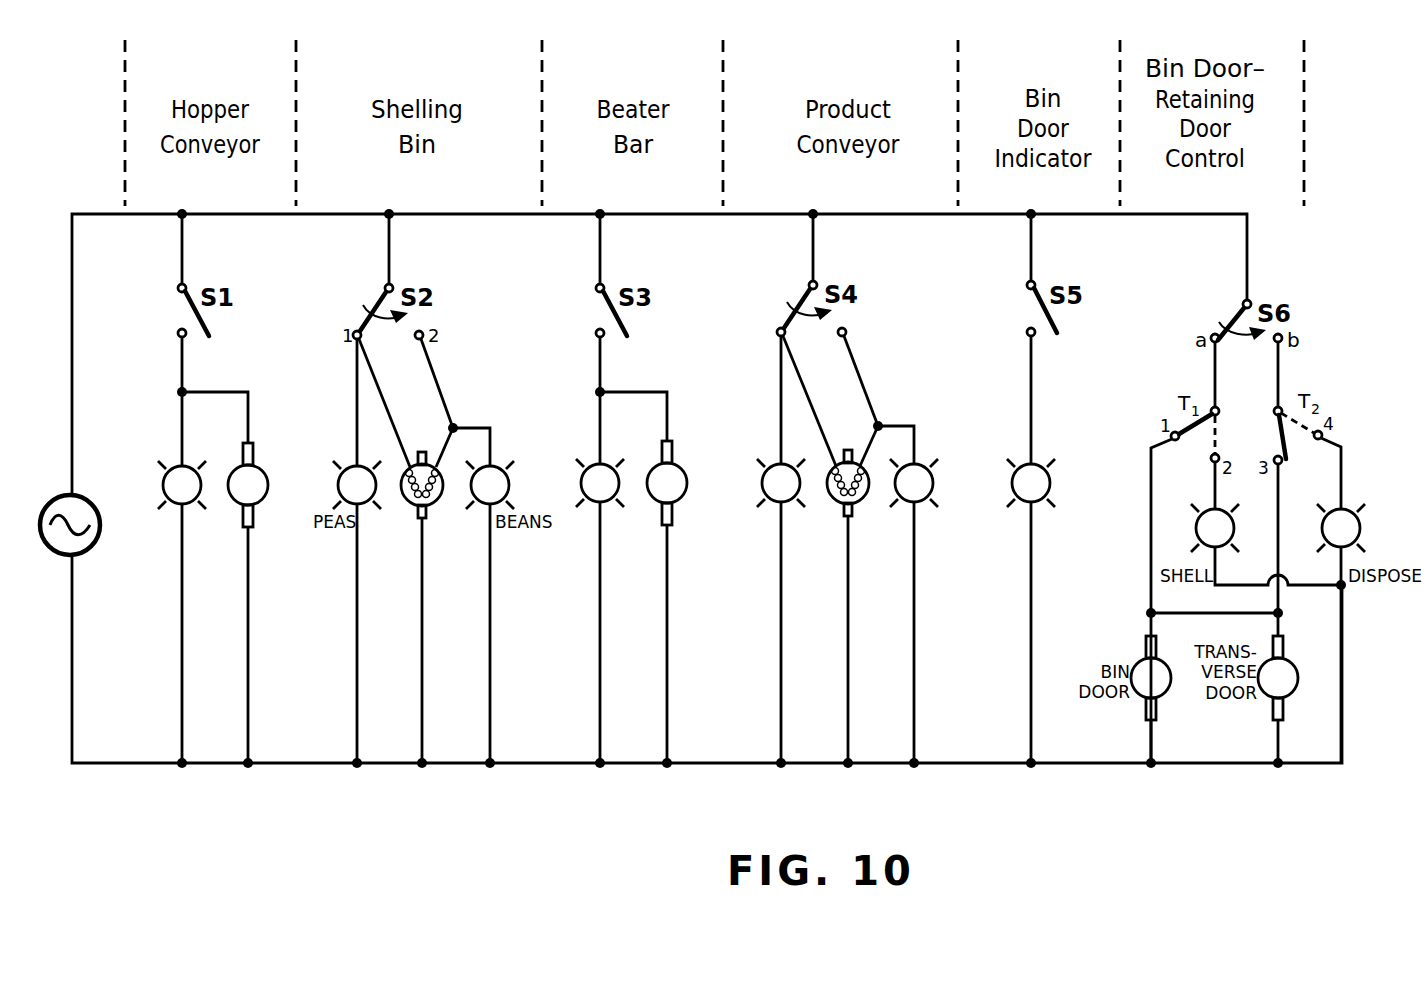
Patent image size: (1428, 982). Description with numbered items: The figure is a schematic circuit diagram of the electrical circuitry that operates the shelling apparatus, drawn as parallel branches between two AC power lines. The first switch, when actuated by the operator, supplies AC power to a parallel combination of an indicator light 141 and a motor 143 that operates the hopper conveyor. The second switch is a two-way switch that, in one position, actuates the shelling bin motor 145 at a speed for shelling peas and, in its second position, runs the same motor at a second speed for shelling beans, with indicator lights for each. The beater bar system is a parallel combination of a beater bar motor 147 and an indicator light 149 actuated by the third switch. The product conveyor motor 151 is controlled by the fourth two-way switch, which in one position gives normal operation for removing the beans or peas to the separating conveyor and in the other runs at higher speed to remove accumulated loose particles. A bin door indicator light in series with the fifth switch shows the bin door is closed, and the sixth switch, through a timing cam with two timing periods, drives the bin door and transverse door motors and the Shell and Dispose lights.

The indicator light 141 is at (169, 464).
The motor 143 is at (258, 466).
The shelling bin motor 145 is at (434, 503).
The beater bar motor 147 is at (678, 500).
The indicator light 149 is at (608, 500).
The product conveyor motor 151 is at (860, 501).